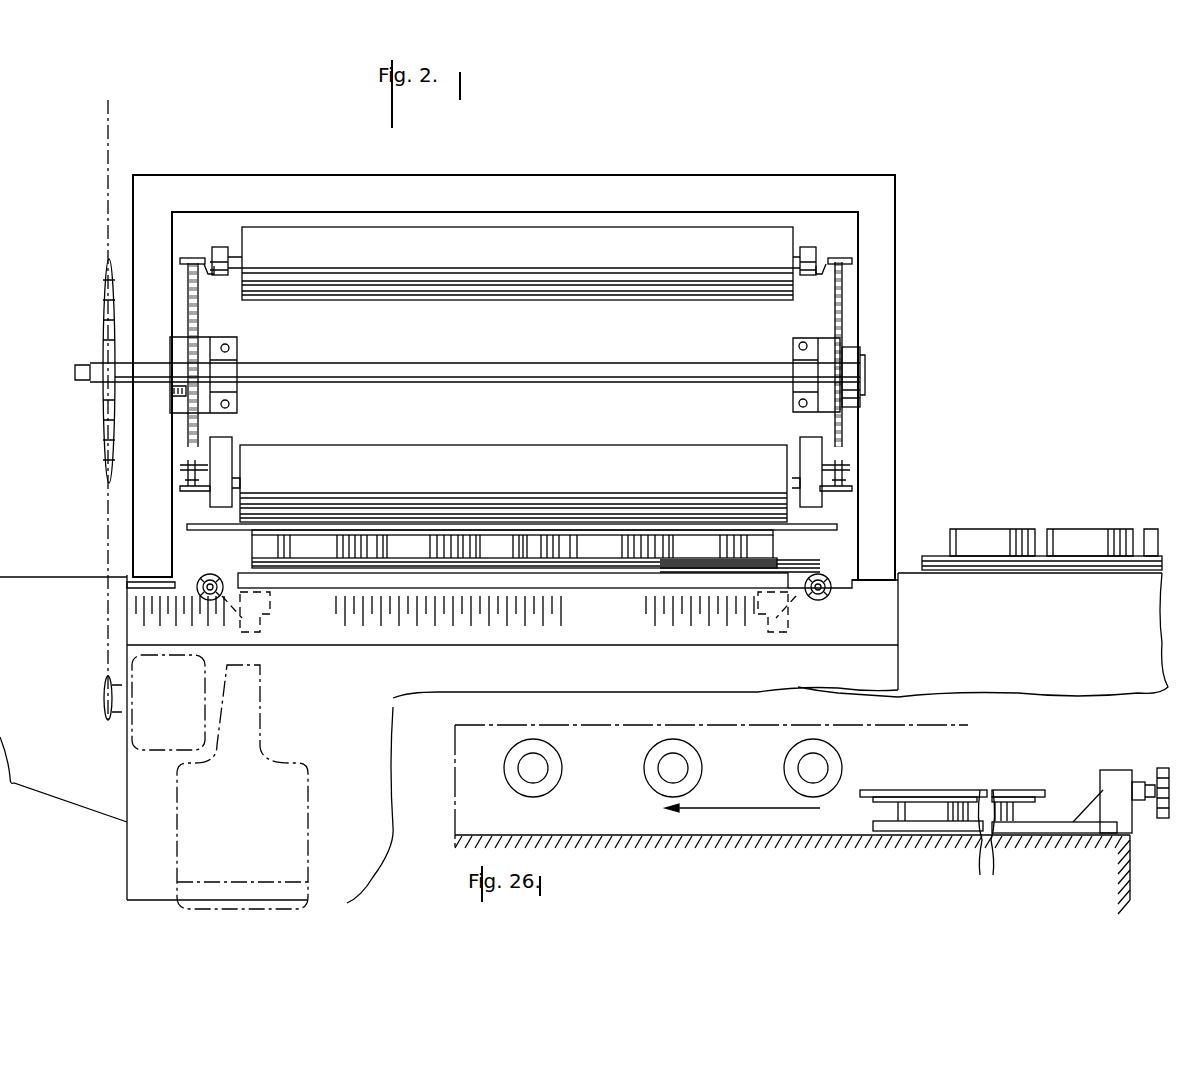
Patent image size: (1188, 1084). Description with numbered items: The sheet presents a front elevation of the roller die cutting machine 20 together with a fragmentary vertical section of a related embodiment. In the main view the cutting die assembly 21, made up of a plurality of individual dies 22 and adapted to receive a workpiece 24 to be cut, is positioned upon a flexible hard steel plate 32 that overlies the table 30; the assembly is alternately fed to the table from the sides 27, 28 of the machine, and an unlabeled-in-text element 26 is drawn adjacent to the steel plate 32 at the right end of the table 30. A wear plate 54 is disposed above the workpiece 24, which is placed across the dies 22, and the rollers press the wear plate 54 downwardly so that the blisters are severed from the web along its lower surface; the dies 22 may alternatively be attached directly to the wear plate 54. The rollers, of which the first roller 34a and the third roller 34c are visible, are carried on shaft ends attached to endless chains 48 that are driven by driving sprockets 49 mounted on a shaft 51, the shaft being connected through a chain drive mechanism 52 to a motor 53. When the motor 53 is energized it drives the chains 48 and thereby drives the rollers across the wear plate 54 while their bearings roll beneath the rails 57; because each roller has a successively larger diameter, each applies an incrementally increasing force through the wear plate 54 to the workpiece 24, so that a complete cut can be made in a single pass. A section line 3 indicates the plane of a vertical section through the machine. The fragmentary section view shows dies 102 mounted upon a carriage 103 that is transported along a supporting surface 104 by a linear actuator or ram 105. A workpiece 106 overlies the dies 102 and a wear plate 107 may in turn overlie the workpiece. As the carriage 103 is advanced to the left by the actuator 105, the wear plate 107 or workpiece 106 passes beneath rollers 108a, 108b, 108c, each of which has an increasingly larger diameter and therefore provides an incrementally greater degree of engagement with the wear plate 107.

In FIG. 2, the section line 3- 3 is at (108, 113).
In FIG. 2, the roller die cutting machine 20 is at (988, 336).
In FIG. 2, the cutting die assembly 21 is at (241, 548).
In FIG. 2, the dies 22 is at (515, 566).
In FIG. 2, the workpiece 24 is at (262, 546).
In FIG. 2, the tray rail 26 is at (776, 560).
In FIG. 2, the side of the machine 27 is at (77, 783).
In FIG. 2, the side of the machine 28 is at (1078, 570).
In FIG. 2, the table 30 is at (652, 632).
In FIG. 2, the flexible hard steel plate 32 is at (820, 588).
In FIG. 2, the roller 34a is at (513, 447).
In FIG. 2, the roller 34c is at (612, 308).
In FIG. 2, the endless chains 48 is at (192, 294).
In FIG. 2, the driving sprockets 49 is at (832, 314).
In FIG. 2, the shaft 51 is at (462, 366).
In FIG. 2, the chain drive mechanism 52 is at (107, 532).
In FIG. 2, the motor 53 is at (292, 792).
In FIG. 2, the wear plate 54 is at (188, 532).
In FIG. 2, the rails 57 is at (230, 440).
In FIG. 26, the dies 102 is at (942, 808).
In FIG. 26, the carriage 103 is at (1052, 825).
In FIG. 26, the supporting surface 104 is at (762, 830).
In FIG. 26, the linear actuator 105 is at (1157, 768).
In FIG. 26, the workpiece 106 is at (882, 800).
In FIG. 26, the wear plate 107 is at (915, 792).
In FIG. 26, the roller 108a is at (834, 756).
In FIG. 26, the roller 108b is at (695, 758).
In FIG. 26, the roller 108c is at (555, 758).